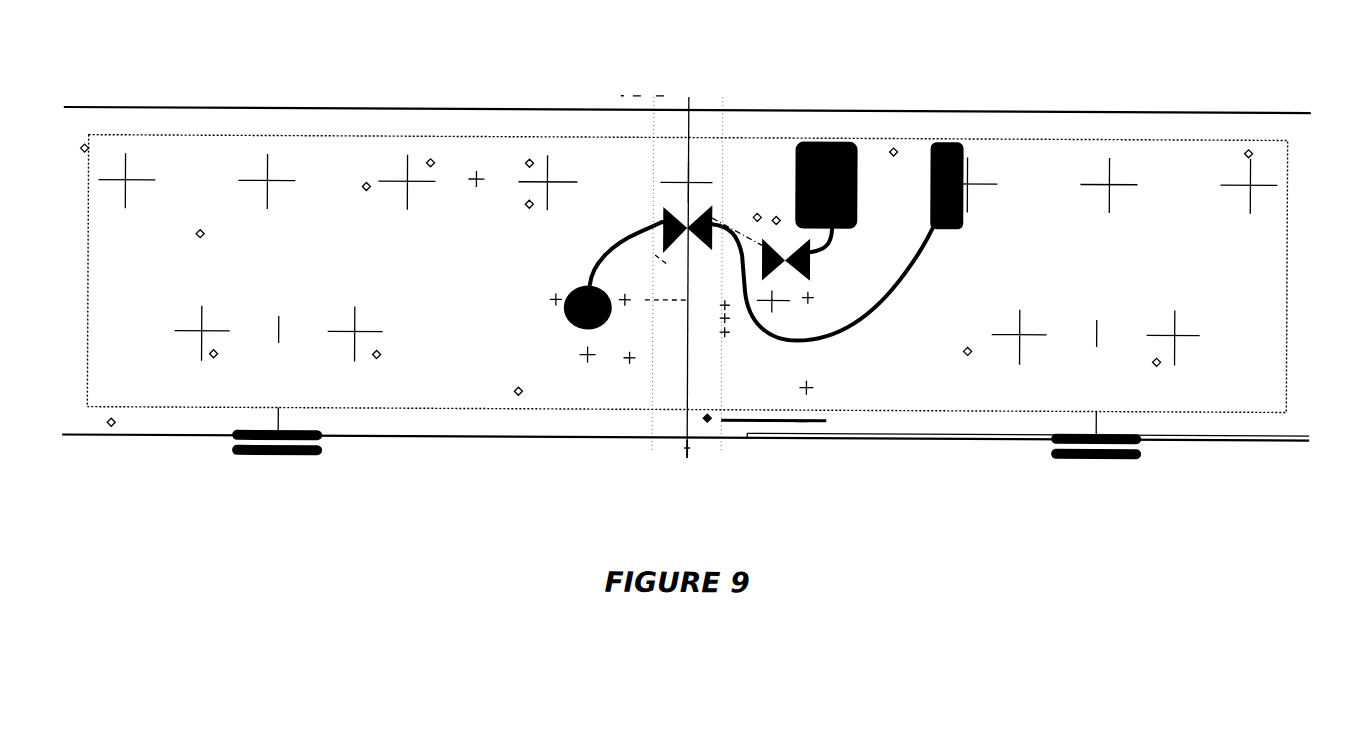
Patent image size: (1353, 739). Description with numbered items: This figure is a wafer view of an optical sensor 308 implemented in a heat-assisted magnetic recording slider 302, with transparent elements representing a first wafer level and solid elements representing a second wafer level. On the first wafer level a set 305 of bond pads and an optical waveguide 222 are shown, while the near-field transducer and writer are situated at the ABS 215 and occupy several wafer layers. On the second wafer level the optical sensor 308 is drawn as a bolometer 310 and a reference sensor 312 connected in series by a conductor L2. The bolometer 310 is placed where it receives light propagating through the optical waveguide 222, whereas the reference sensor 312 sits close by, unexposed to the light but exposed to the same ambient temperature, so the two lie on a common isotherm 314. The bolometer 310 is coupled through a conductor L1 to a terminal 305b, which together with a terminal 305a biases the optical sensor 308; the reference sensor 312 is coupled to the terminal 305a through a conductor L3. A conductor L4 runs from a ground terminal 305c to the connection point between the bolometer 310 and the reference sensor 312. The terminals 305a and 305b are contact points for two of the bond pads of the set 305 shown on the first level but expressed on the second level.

The slider 302 is at (1287, 315).
The set of bond pads 305 is at (1160, 163).
The terminal 305a is at (825, 141).
The terminal 305b is at (582, 292).
The ground terminal 305c is at (947, 141).
The optical waveguide 222 is at (662, 153).
The ABS 215 is at (733, 439).
The optical sensor 308 is at (768, 205).
The bolometer 310 is at (663, 208).
The reference sensor 312 is at (808, 268).
The isotherm 314 is at (646, 246).
The conductor L1 is at (600, 257).
The conductor L2 is at (731, 225).
The conductor L3 is at (813, 240).
The conductor L4 is at (882, 302).